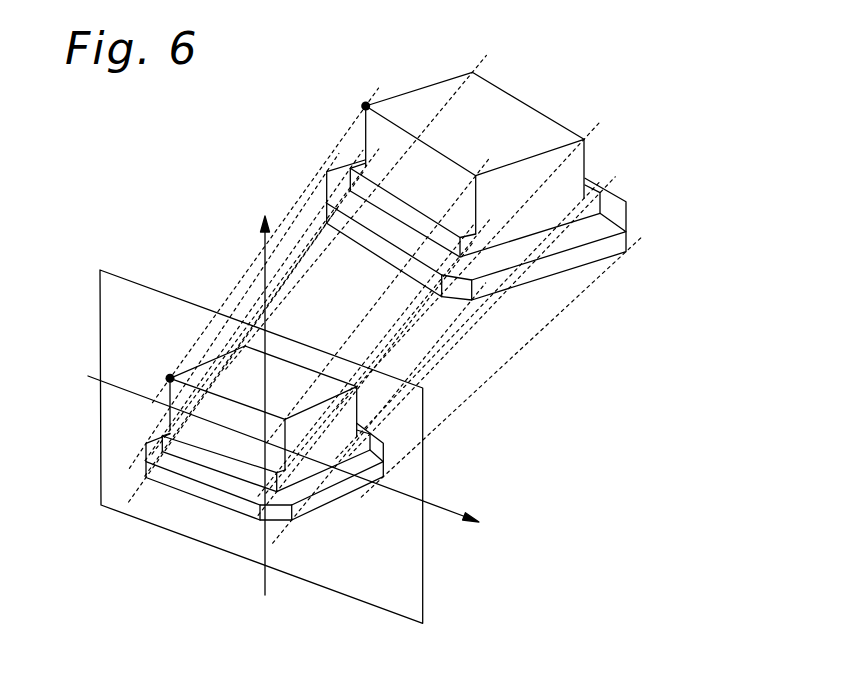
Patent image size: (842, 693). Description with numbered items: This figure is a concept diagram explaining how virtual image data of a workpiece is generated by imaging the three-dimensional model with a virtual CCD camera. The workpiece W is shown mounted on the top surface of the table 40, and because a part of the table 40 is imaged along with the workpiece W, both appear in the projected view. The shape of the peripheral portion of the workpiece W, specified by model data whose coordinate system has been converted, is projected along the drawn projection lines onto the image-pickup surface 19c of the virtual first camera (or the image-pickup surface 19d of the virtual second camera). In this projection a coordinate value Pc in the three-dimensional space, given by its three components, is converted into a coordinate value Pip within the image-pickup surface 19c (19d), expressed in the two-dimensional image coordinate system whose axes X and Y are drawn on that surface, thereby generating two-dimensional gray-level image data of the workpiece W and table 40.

The table 40 is at (608, 205).
The workpiece W is at (515, 112).
The image-pickup surface 19c is at (342, 446).
The image-pickup surface 19d is at (403, 566).
The coordinate value in the three-dimensional space Pc is at (366, 104).
The coordinate value within the image-pickup surface Pip is at (170, 376).
The X axis of image coordinate system X is at (293, 459).
The Y axis of image coordinate system Y is at (263, 392).